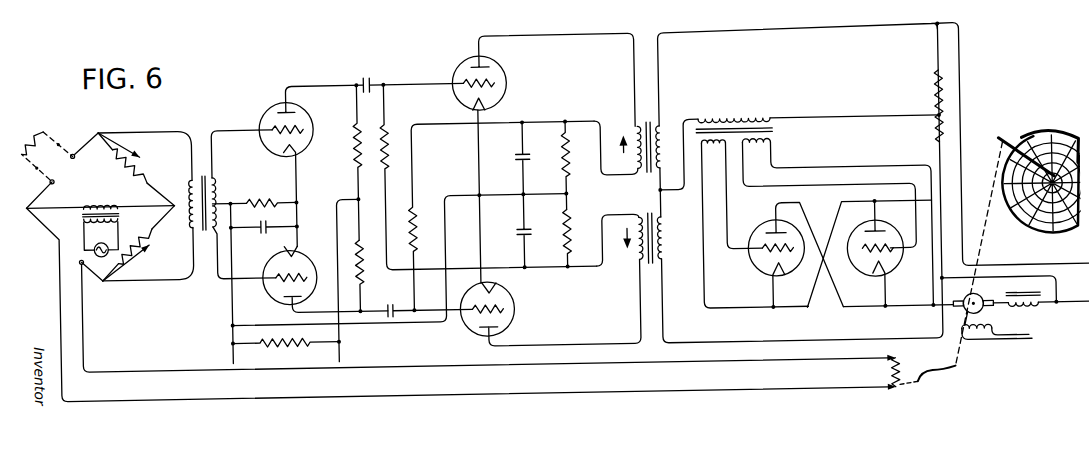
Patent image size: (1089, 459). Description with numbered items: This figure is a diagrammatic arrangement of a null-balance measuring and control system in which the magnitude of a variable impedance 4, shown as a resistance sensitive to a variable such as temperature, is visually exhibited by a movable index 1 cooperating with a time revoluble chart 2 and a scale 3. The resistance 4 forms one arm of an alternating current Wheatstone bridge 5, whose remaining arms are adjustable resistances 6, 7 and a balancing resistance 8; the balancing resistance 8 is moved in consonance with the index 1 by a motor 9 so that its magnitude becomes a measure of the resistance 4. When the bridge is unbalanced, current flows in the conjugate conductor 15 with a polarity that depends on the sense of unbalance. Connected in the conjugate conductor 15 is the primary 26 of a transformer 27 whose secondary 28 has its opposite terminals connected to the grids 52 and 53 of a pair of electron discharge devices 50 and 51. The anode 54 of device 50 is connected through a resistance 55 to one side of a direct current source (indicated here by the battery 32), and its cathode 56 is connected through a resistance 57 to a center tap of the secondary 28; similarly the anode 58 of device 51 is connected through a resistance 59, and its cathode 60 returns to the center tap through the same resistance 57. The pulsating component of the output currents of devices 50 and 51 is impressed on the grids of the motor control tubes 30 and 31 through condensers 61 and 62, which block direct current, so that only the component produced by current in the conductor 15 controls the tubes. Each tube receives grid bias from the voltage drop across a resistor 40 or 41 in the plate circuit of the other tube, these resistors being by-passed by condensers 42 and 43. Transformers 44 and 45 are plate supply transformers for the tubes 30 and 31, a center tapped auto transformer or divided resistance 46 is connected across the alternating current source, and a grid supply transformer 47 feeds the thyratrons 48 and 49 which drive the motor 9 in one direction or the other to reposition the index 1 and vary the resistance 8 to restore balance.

The movable index 1 is at (1006, 148).
The time revoluble chart 2 is at (1031, 239).
The scale 3 is at (1057, 149).
The variable impedance 4 is at (58, 161).
The alternating current Wheatstone bridge 5 is at (94, 177).
The adjustable resistance 6 is at (153, 174).
The adjustable resistance 7 is at (154, 232).
The balancing resistance 8 is at (936, 266).
The motor 9 is at (1000, 336).
The conjugate conductor 15 is at (166, 124).
The primary 26 is at (190, 197).
The transformer 27 is at (213, 166).
The secondary 28 is at (218, 184).
The motor control tube 30 is at (506, 66).
The motor control tube 31 is at (514, 300).
The battery 32 is at (286, 355).
The resistor 40 is at (577, 164).
The resistor 41 is at (580, 239).
The condenser 42 is at (536, 158).
The condenser 43 is at (536, 232).
The plate supply transformer 44 is at (649, 122).
The plate supply transformer 45 is at (647, 262).
The center tapped auto transformer 46 is at (935, 99).
The grid supply transformer 47 is at (780, 133).
The thyratron 48 is at (761, 276).
The thyratron 49 is at (889, 271).
The electron discharge device 50 is at (295, 129).
The electron discharge device 51 is at (309, 275).
The grid 52 is at (271, 120).
The grid 53 is at (273, 274).
The anode 54 is at (284, 106).
The resistance 55 is at (345, 162).
The cathode 56 is at (298, 150).
The resistance 57 is at (262, 195).
The anode 58 is at (285, 296).
The resistance 59 is at (363, 252).
The cathode 60 is at (281, 250).
The condenser 61 is at (407, 74).
The condenser 62 is at (429, 300).